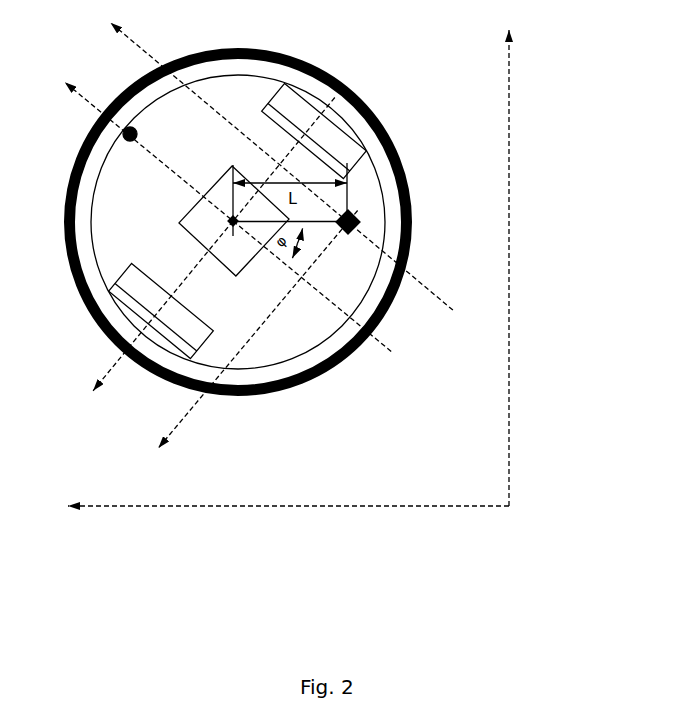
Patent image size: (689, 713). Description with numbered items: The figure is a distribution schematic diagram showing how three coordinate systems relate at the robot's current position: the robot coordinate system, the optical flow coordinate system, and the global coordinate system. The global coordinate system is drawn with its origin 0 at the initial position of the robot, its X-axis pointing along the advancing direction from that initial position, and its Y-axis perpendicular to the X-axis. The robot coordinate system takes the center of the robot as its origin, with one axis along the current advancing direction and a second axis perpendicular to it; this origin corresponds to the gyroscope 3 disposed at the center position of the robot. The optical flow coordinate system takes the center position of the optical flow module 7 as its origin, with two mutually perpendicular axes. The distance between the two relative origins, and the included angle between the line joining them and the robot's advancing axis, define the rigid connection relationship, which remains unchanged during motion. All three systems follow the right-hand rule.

The origin of world coordinate system 0 is at (283, 266).
The gyroscope 3 is at (180, 227).
The optical flow module 7 is at (360, 222).